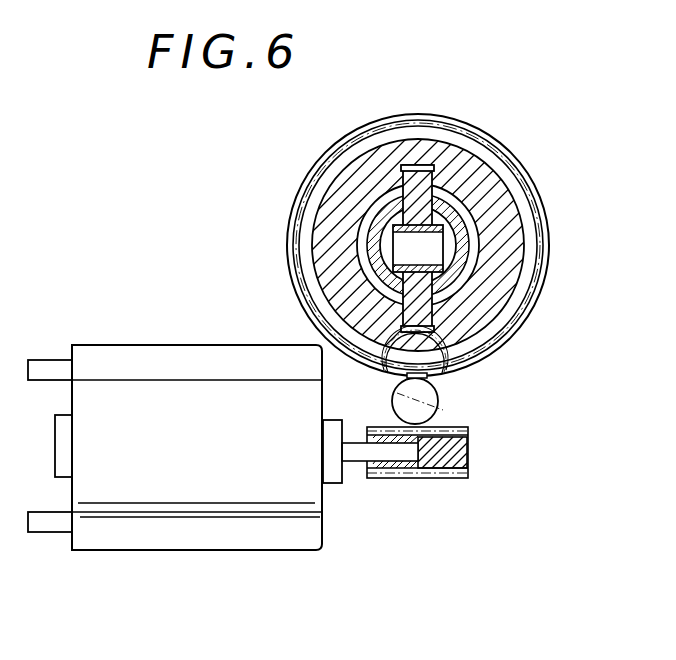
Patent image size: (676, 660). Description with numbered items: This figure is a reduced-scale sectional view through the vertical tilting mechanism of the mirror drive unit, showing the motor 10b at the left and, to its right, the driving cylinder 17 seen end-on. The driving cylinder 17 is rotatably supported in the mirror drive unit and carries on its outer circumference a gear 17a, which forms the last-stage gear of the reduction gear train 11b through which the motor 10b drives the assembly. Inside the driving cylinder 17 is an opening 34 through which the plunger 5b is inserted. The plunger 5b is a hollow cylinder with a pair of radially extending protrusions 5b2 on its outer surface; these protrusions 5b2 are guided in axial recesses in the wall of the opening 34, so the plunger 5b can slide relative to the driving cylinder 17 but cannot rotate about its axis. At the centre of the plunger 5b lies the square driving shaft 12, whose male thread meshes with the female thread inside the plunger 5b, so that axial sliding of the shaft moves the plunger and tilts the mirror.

The driving cylinder 17 is at (382, 168).
The gear 17a is at (536, 194).
The opening 34 is at (362, 243).
The plunger 5b is at (464, 256).
The protrusions 5b2 is at (442, 166).
The square driving shaft 12 is at (428, 270).
The reduction gear train 11b is at (460, 406).
The motor 10b is at (165, 360).